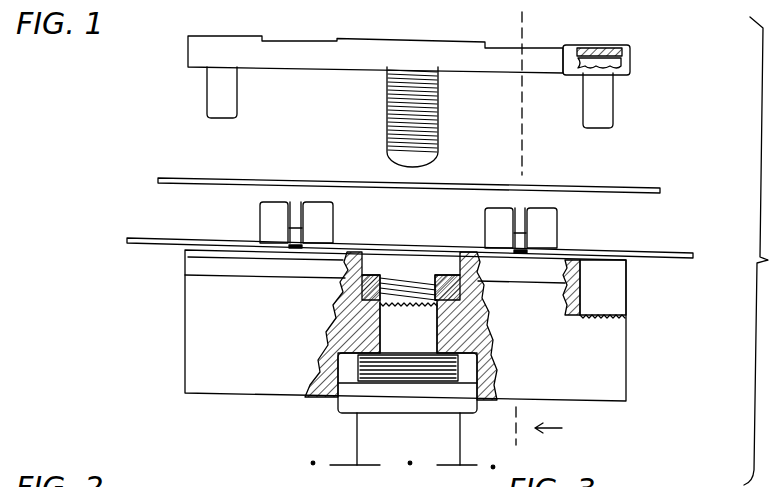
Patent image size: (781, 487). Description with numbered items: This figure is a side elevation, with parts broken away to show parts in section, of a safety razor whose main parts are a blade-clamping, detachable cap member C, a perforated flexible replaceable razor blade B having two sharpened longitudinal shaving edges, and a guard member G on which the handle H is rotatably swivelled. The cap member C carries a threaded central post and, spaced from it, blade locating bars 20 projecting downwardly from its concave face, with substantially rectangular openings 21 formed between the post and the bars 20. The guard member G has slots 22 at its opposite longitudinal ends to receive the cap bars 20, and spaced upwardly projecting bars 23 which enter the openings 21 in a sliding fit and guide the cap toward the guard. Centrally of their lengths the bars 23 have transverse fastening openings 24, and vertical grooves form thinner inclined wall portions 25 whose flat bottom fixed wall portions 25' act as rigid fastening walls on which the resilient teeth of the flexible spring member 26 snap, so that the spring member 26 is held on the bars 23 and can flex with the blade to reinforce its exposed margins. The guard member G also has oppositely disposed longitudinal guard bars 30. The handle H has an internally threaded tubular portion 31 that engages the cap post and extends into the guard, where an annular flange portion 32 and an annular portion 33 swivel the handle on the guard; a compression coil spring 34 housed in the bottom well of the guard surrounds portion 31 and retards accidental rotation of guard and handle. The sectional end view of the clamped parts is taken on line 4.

The section line 4— 4 is at (534, 239).
The cap member C is at (188, 60).
The razor blade B is at (180, 176).
The guard member G is at (185, 370).
The handle H is at (357, 443).
The blade locating bars 20 is at (237, 101).
The openings 21 is at (290, 25).
The slots 22 is at (612, 303).
The blade-positioning and spring member-positioning and securing bars 23 is at (333, 215).
The fastening openings 24 is at (293, 240).
The inclined wall portions 25 is at (565, 214).
The flat bottom fixed wall portions 25' is at (559, 237).
The spring member 26 is at (660, 253).
The guard bars 30 is at (220, 278).
The internally threaded tubular portion 31 is at (408, 328).
The annular flange portion 32 is at (455, 274).
The annular portion 33 is at (407, 385).
The compression coil spring 34 is at (363, 377).